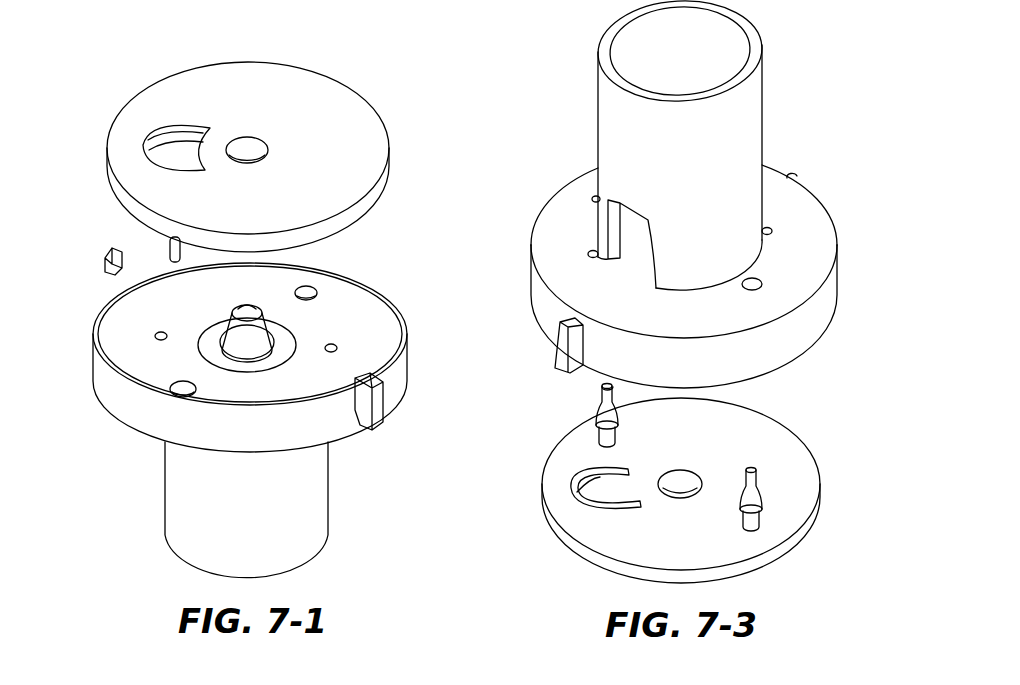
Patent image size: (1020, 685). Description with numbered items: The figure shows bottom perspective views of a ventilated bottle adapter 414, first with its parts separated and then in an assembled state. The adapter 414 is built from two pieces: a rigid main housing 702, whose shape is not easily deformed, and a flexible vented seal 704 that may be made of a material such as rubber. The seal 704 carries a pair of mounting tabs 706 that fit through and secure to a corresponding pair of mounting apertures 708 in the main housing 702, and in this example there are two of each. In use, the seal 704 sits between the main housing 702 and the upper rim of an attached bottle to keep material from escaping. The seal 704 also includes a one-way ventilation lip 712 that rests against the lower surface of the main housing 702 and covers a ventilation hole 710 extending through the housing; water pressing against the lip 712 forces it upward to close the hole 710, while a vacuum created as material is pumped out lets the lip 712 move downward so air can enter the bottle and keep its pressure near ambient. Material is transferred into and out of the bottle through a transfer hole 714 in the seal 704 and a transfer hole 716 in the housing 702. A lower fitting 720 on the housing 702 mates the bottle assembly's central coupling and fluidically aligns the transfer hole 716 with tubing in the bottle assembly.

In FIG. 7-1, the bottle adapter 414 is at (156, 569).
In FIG. 7-3, the bottle adapter 414 is at (560, 570).
In FIG. 7-1, the main housing 702 is at (334, 528).
In FIG. 7-3, the main housing 702 is at (764, 108).
In FIG. 7-1, the vented seal 704 is at (341, 86).
In FIG. 7-3, the vented seal 704 is at (786, 561).
In FIG. 7-1, the mounting tabs 706 is at (168, 250).
In FIG. 7-3, the mounting tabs 706 is at (601, 394).
In FIG. 7-1, the mounting apertures 708 is at (313, 289).
In FIG. 7-3, the mounting apertures 708 is at (760, 289).
In FIG. 7-1, the ventilation hole 710 is at (338, 348).
In FIG. 7-3, the ventilation hole 710 is at (590, 251).
In FIG. 7-1, the one-way ventilation lip 712 is at (166, 150).
In FIG. 7-3, the one-way ventilation lip 712 is at (582, 505).
In FIG. 7-1, the material transfer hole 714 is at (247, 148).
In FIG. 7-1, the material transfer hole 716 is at (262, 312).
In FIG. 7-3, the material transfer hole 716 is at (680, 478).
In FIG. 7-1, the lower fitting 720 is at (238, 318).